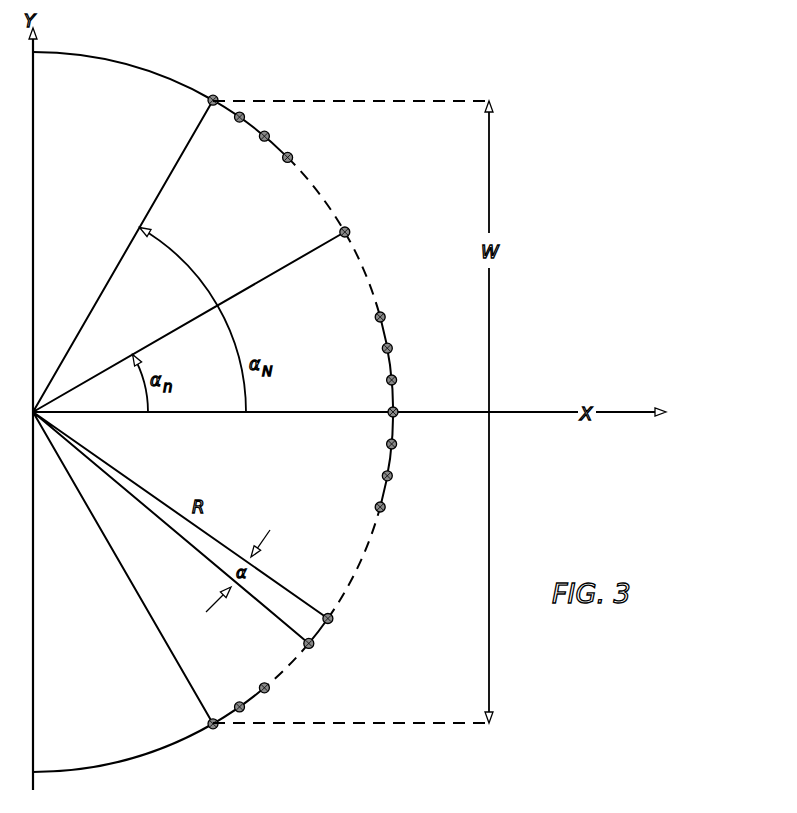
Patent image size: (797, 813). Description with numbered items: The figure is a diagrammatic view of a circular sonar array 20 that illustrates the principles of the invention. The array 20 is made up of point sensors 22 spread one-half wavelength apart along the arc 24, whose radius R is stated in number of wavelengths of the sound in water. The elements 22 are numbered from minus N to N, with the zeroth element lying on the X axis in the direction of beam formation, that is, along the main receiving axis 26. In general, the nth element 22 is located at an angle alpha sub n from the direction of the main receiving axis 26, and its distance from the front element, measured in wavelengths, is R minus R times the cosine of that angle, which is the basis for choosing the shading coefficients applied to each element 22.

The circular array 20 is at (405, 172).
The point sensors 22 is at (283, 160).
The arc 24 is at (372, 260).
The main receiving axis 26 is at (614, 410).